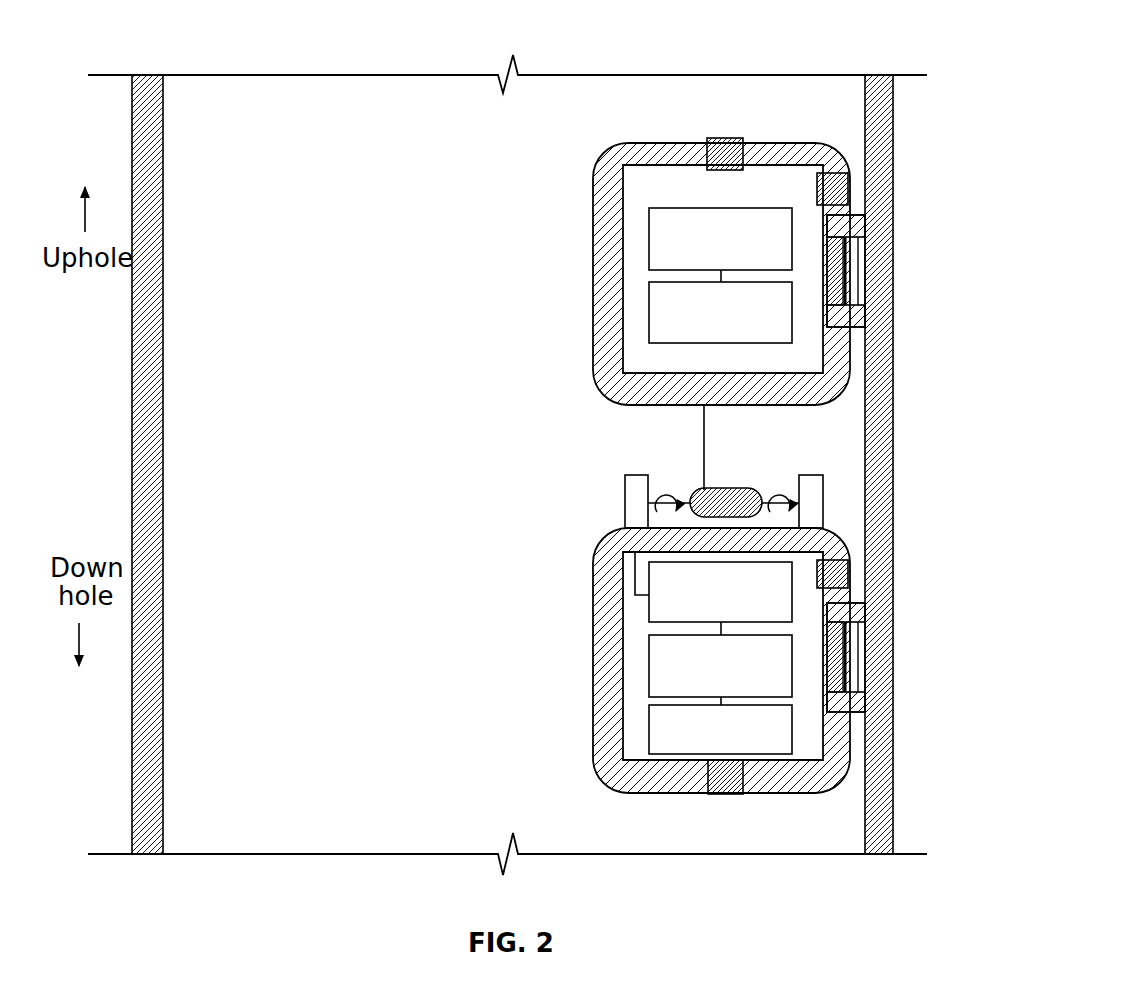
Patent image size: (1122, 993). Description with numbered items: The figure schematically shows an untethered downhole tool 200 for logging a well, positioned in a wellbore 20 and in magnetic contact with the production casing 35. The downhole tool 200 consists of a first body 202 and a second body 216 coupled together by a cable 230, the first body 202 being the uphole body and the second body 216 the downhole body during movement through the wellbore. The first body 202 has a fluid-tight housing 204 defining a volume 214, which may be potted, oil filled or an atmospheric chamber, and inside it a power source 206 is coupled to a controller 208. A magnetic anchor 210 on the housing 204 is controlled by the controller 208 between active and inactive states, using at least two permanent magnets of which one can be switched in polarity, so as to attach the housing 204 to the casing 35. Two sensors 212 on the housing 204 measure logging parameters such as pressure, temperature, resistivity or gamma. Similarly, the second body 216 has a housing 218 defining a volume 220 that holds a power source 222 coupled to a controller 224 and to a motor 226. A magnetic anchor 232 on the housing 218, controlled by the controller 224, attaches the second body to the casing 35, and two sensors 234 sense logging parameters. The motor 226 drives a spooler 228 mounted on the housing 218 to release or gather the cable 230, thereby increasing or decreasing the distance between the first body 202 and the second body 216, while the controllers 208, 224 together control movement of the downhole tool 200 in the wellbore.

The wellbore 20 is at (893, 120).
The production casing 35 is at (163, 148).
The downhole tool 200 is at (506, 418).
The first body 202 is at (732, 241).
The housing 204 is at (607, 157).
The power source 206 is at (687, 249).
The controller 208 is at (673, 302).
The magnetic anchor 210 is at (857, 330).
The sensors 212 is at (725, 140).
The volume 214 is at (672, 177).
The second body 216 is at (732, 669).
The housing 218 is at (673, 603).
The volume 220 is at (803, 737).
The power source 222 is at (648, 740).
The controller 224 is at (648, 658).
The motor 226 is at (640, 598).
The spooler 228 is at (684, 486).
The cable 230 is at (704, 448).
The magnetic anchor 232 is at (855, 600).
The sensors 234 is at (850, 575).